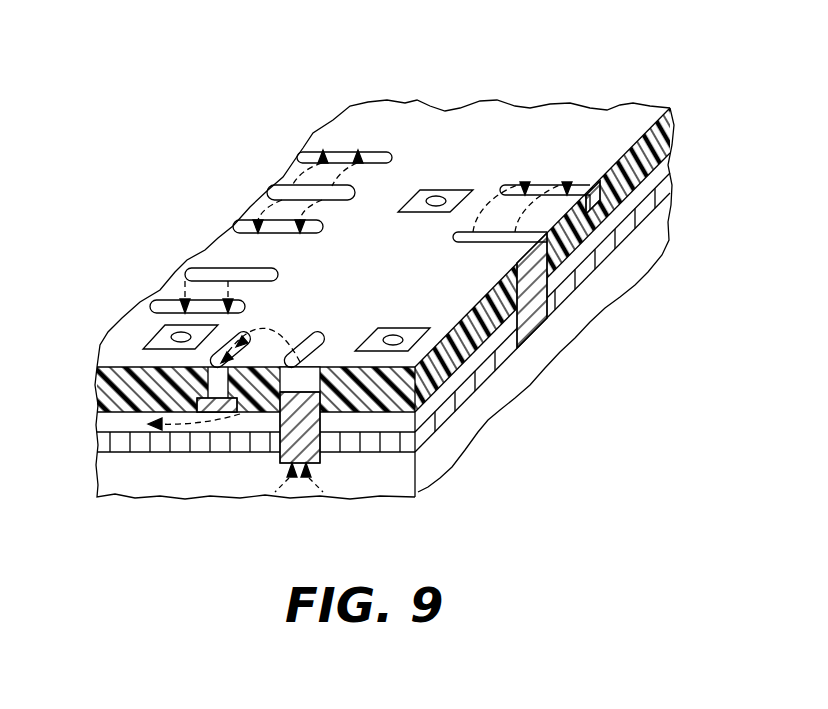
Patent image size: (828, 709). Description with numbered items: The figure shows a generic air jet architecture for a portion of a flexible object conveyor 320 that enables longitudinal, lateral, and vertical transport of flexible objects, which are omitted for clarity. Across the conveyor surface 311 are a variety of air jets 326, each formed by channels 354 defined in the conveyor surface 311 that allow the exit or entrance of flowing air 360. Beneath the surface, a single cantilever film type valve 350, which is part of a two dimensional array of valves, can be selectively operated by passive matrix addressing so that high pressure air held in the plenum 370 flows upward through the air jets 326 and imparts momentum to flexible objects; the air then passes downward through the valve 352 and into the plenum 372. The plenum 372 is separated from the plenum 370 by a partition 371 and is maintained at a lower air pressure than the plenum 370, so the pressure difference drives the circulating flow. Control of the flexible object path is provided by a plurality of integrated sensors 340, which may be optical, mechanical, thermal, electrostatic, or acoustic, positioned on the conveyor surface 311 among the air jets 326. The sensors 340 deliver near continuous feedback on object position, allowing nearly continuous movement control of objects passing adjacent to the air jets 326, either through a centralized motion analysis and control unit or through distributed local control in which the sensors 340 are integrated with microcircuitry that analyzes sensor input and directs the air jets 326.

The flexible object conveyor 320 is at (270, 60).
The conveyor surface 311 is at (515, 120).
The air jets 326 is at (290, 150).
The integrated sensors 340 is at (455, 166).
The cantilever film type valve 350 is at (320, 463).
The valve 352 is at (200, 405).
The channels 354 is at (376, 411).
The flowing air 360 is at (265, 350).
The plenum 370 is at (458, 432).
The partition 371 is at (112, 440).
The plenum 372 is at (470, 370).